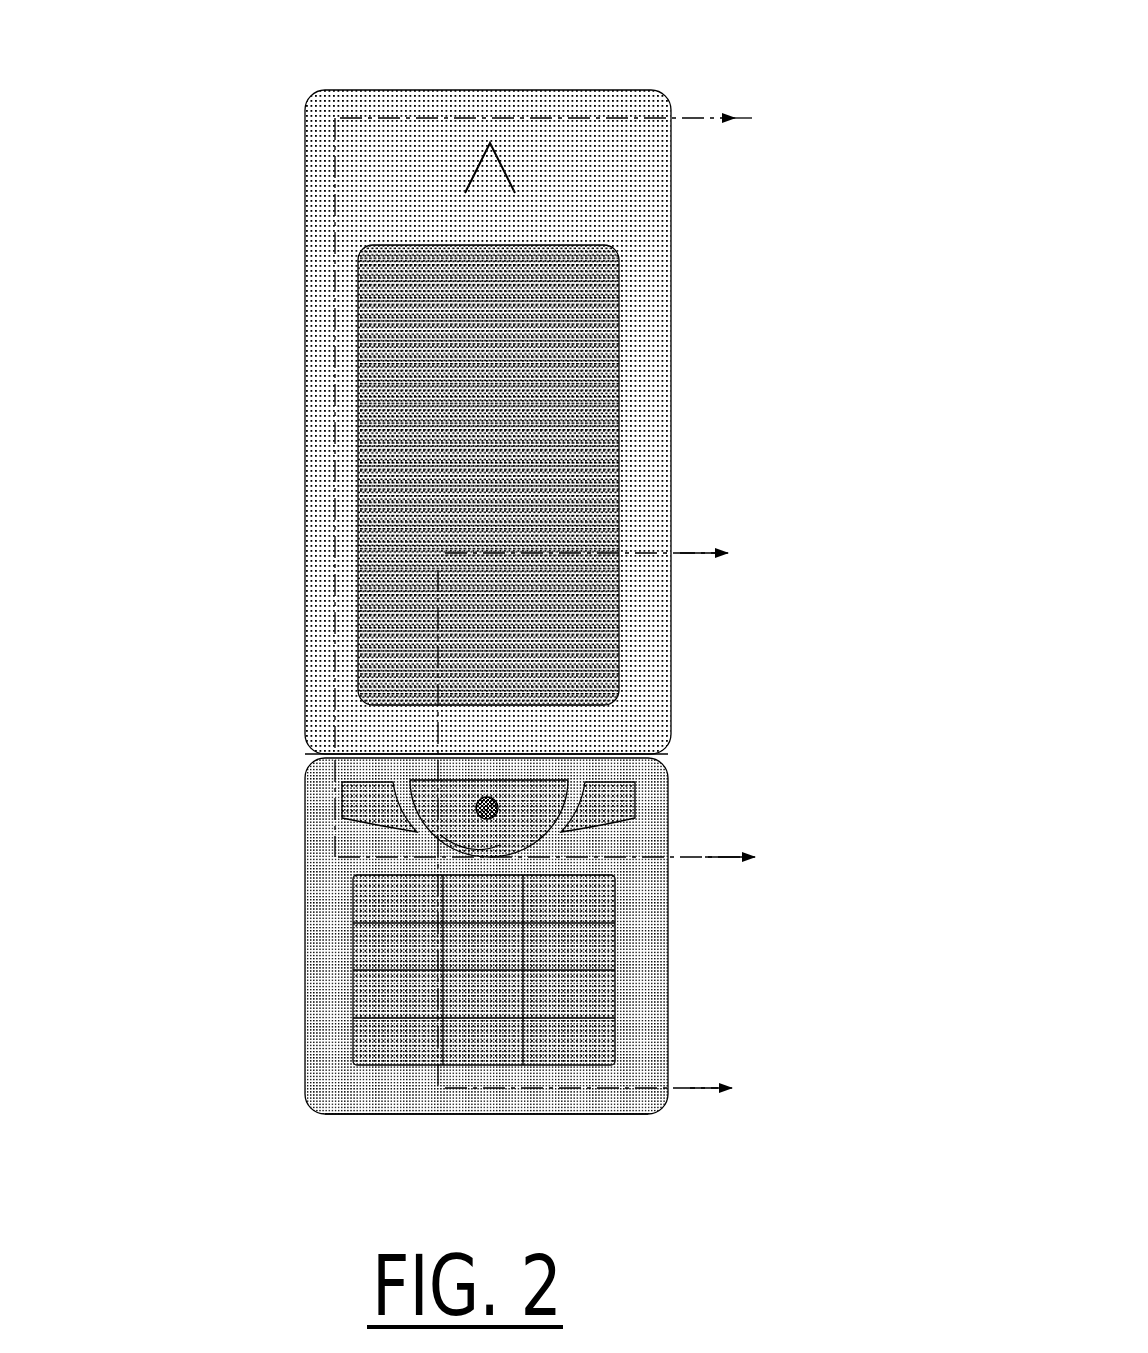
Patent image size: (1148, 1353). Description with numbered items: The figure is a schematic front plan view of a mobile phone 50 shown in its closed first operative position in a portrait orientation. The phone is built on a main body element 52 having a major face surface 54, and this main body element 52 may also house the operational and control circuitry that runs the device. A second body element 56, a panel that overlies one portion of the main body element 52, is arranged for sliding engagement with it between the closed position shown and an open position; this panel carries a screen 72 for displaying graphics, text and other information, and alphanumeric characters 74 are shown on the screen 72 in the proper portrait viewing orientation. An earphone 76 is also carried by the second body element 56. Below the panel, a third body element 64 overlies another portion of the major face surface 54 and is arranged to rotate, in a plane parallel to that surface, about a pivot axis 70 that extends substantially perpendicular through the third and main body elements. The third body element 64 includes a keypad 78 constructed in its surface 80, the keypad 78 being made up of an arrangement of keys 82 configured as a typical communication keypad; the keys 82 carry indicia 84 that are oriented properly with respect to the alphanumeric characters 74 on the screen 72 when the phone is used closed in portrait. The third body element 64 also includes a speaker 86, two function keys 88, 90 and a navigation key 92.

The mobile phone 50 is at (562, 45).
The main body element 52 is at (683, 752).
The major face surface 54 is at (300, 760).
The second body element 56 is at (682, 185).
The third body element 64 is at (675, 1068).
The pivot axis 70 is at (443, 930).
The screen 72 is at (588, 433).
The alphanumeric characters 74 is at (578, 347).
The earphone 76 is at (500, 153).
The keypad 78 is at (480, 1000).
The surface 80 is at (598, 1000).
The keys 82 is at (358, 948).
The indicia 84 is at (400, 988).
The speaker 86 is at (487, 798).
The function key 88 is at (357, 798).
The function key 90 is at (612, 806).
The navigation key 92 is at (447, 835).